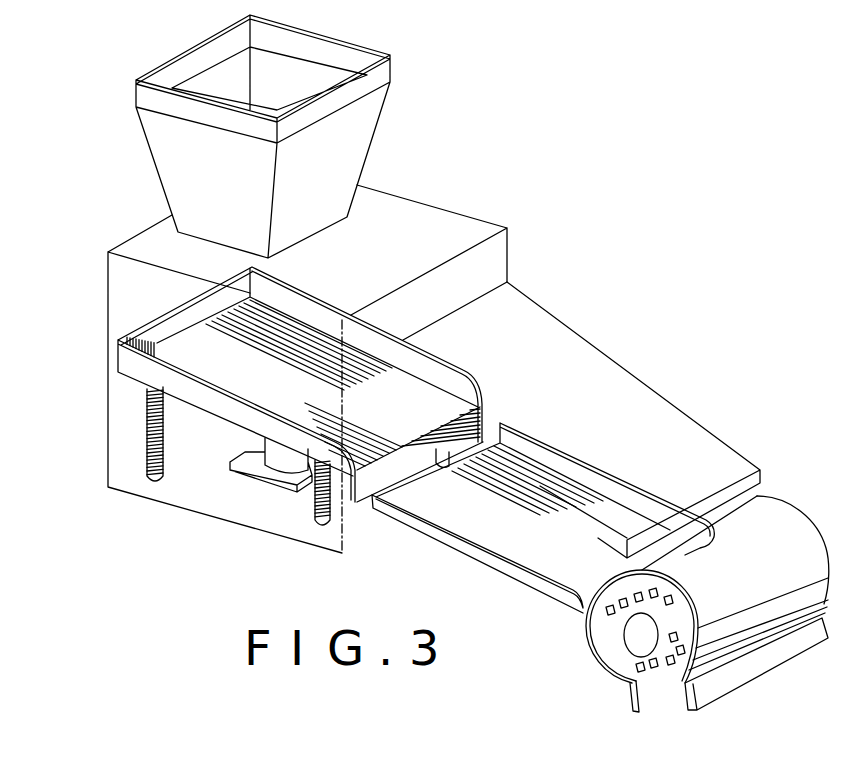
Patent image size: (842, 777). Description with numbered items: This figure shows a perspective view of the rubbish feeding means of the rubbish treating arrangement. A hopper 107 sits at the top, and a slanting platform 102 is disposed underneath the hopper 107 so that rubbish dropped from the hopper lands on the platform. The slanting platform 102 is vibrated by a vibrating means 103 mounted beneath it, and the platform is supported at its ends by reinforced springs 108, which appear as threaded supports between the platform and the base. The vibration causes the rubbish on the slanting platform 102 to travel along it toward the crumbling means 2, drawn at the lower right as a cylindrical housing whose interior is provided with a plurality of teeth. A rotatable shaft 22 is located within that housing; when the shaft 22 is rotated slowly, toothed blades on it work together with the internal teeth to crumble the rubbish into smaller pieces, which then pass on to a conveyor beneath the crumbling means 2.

The crumbling means 2 is at (792, 532).
The rotatable shaft 22 is at (640, 638).
The slanting platform 102 is at (125, 357).
The vibrating means 103 is at (275, 453).
The hopper 107 is at (347, 160).
The reinforced springs 108 is at (147, 457).